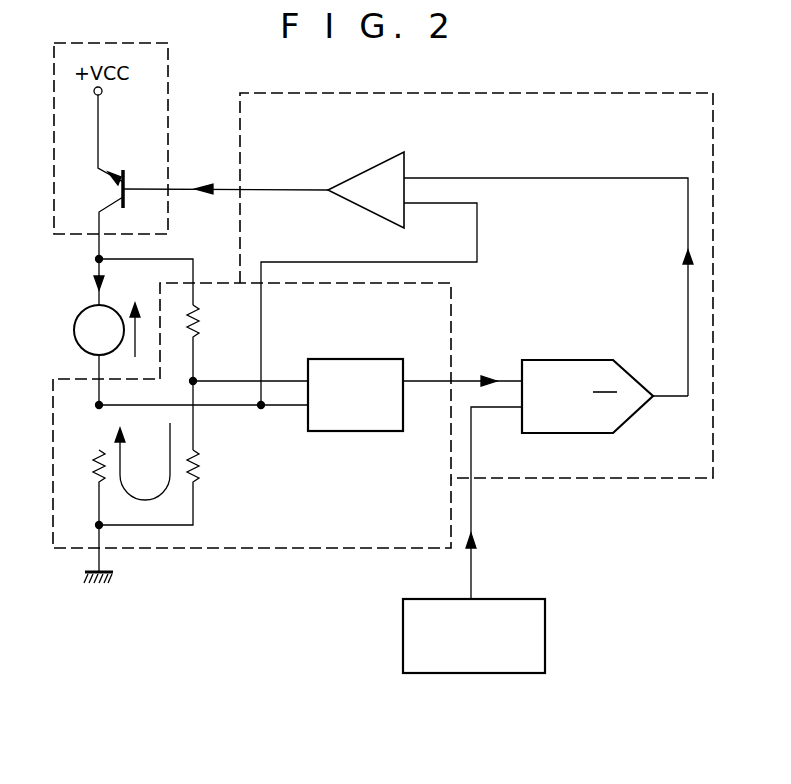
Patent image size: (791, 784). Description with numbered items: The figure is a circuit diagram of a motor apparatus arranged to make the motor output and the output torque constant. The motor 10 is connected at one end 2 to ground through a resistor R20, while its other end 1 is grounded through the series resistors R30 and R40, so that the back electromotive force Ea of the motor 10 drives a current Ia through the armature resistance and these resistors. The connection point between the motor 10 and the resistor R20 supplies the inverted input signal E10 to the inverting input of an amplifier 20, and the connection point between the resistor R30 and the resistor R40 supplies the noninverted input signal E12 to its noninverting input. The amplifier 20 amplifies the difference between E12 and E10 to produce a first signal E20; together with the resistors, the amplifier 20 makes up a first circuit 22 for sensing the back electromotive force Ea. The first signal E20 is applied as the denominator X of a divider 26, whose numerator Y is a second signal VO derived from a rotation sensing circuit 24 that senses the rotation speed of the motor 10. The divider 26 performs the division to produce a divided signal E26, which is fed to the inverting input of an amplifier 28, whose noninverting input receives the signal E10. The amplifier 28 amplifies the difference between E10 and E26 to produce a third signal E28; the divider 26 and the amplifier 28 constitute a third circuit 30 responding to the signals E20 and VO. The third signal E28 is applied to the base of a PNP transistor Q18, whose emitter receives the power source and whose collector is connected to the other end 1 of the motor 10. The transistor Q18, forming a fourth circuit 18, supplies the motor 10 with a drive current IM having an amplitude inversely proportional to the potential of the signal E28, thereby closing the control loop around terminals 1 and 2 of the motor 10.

The fourth circuit 18 is at (170, 62).
The PNP transistor Q18 is at (121, 170).
The third signal E28 is at (216, 186).
The drive current IM is at (93, 270).
The motor 10 is at (78, 327).
The other end of the motor 1 is at (107, 294).
The one end of the motor 2 is at (89, 379).
The back electromotive force Ea is at (138, 319).
The resistor R30 is at (199, 322).
The noninverted input signal E12 is at (196, 385).
The inverted input signal E10 is at (263, 409).
The resistor R20 is at (104, 476).
The resistor R40 is at (199, 458).
The current Ia is at (142, 457).
The first circuit 22 is at (264, 549).
The third circuit 30 is at (565, 104).
The amplifier 28 is at (350, 186).
The divided signal E26 is at (686, 214).
The amplifier 20 is at (372, 358).
The first signal E20 is at (502, 378).
The divider 26 is at (576, 358).
The second signal VO is at (473, 568).
The rotation sensing circuit 24 is at (546, 647).